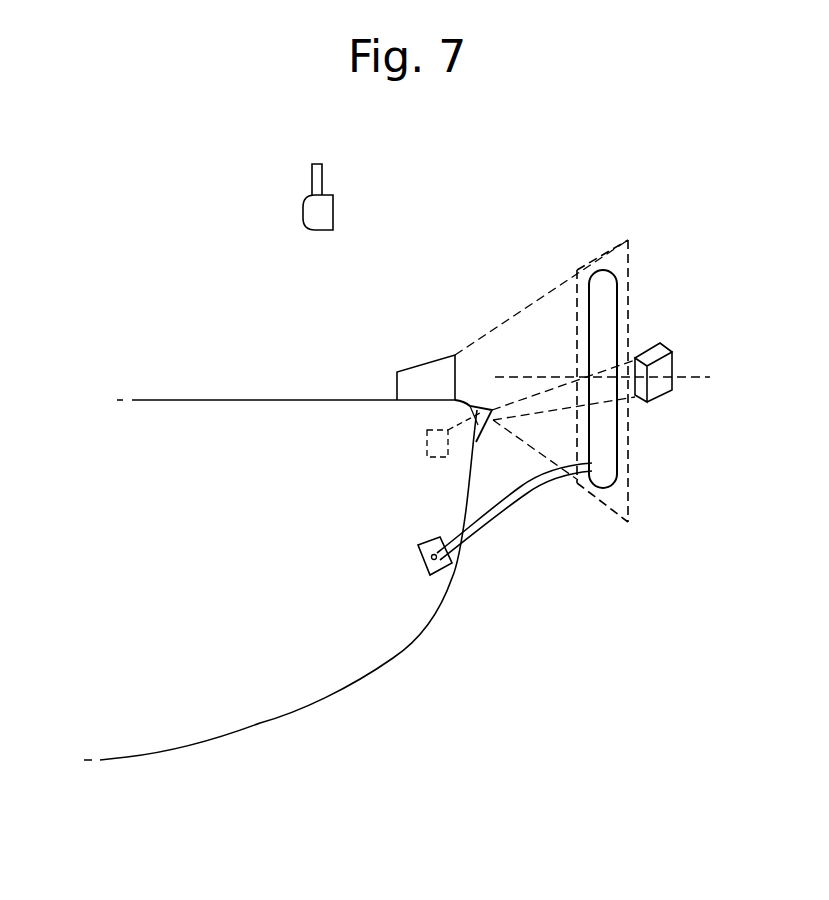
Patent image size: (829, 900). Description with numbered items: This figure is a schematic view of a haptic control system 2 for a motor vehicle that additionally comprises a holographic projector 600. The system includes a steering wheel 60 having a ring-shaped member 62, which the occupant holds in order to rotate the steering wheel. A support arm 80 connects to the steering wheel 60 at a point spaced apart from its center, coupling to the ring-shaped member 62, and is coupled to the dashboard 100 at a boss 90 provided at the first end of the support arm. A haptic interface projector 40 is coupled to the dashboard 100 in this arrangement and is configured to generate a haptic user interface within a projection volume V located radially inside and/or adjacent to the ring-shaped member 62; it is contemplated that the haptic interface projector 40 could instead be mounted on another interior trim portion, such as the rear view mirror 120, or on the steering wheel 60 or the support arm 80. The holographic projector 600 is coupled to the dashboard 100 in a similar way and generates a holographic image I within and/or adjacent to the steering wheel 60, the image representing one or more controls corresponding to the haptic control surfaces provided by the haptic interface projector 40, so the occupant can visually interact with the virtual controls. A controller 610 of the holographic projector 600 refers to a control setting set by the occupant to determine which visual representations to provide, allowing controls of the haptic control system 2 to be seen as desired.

The haptic control system 2 is at (134, 258).
The rear view mirror 120 is at (303, 210).
The steering wheel 60 is at (538, 264).
The projection volume V is at (624, 250).
The ring-shaped member 62 is at (617, 281).
The holographic image I is at (671, 348).
The haptic interface projector 40 is at (423, 375).
The holographic projector 600 is at (477, 410).
The controller 610 is at (427, 443).
The support arm 80 is at (482, 535).
The boss 90 is at (418, 558).
The dashboard 100 is at (393, 658).